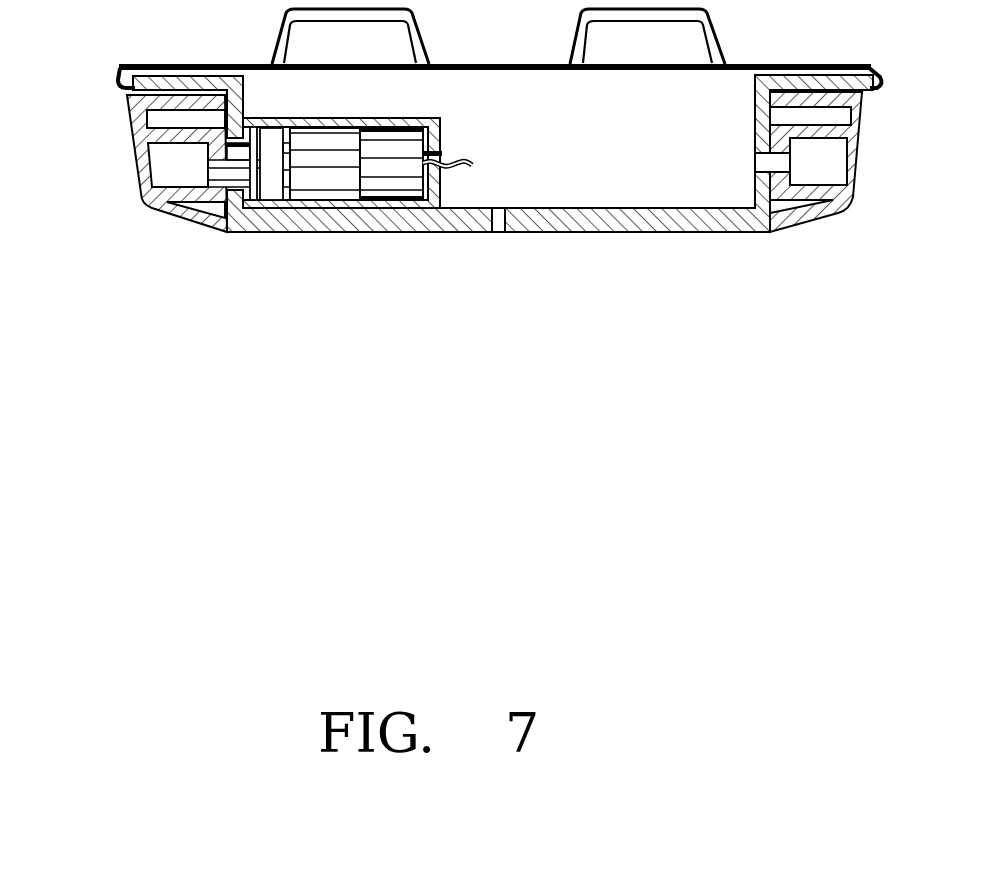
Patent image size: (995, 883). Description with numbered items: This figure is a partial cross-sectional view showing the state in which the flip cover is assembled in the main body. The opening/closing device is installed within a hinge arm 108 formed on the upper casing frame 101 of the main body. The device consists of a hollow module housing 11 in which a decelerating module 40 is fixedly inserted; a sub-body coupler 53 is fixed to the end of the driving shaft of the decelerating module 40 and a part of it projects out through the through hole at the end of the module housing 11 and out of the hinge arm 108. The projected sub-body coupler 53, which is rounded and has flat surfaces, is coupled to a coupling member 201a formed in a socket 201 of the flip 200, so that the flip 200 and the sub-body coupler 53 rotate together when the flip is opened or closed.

The upper casing frame 101 is at (503, 200).
The hinge arm 108 is at (450, 232).
The module housing 11 is at (384, 207).
The decelerating module 40 is at (318, 185).
The sub-body coupler 53 is at (222, 173).
The flip 200 is at (141, 195).
The socket 201 is at (143, 135).
The coupling member 201a is at (205, 144).